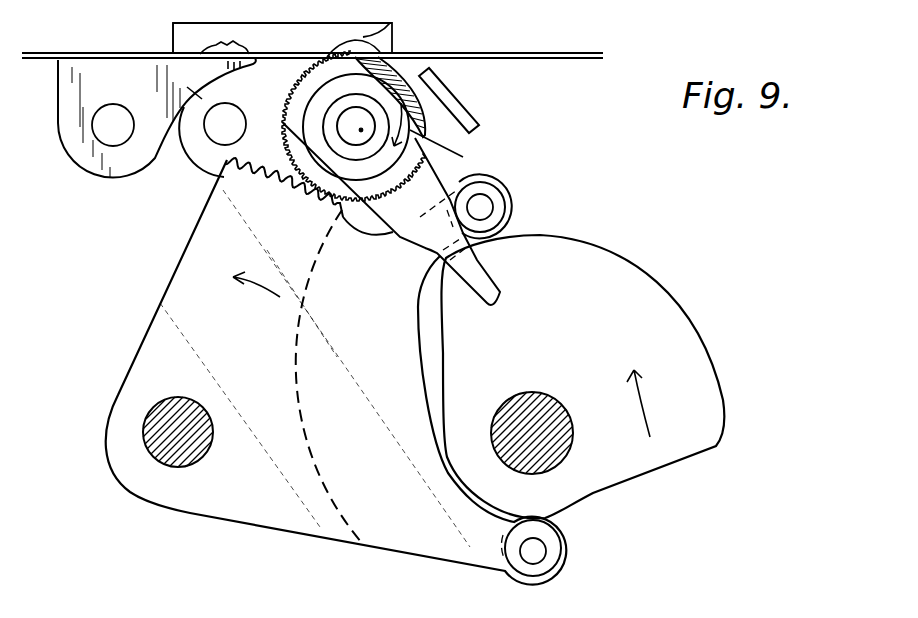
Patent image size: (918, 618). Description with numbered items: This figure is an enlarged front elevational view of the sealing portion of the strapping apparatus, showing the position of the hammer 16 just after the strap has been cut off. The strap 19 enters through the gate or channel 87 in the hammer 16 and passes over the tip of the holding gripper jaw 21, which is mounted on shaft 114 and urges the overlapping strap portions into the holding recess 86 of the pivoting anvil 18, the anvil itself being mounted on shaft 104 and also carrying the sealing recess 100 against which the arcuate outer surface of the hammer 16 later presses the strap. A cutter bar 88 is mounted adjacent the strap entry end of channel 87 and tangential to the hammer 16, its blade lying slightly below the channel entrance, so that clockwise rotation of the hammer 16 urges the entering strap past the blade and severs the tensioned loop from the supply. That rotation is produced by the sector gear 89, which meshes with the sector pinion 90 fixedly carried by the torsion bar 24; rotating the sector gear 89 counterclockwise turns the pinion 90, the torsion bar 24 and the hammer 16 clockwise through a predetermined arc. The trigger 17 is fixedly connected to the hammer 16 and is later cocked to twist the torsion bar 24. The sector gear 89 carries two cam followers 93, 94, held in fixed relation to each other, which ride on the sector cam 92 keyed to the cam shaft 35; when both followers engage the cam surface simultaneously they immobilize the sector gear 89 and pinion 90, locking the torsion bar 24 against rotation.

The pivoting anvil 18 is at (173, 32).
The holding recess 86 is at (230, 47).
The sealing recess 100 is at (392, 23).
The strap 19 is at (490, 50).
The hammer 16 is at (297, 90).
The cutter bar 88 is at (427, 87).
The channel 87 is at (453, 151).
The cam follower 93 is at (500, 183).
The holding gripper jaw 21 is at (201, 142).
The shaft 114 is at (110, 130).
The shaft 104 is at (222, 130).
The torsion bar 24 is at (362, 132).
The sector pinion 90 is at (303, 163).
The sector gear 89 is at (217, 230).
The trigger 17 is at (480, 283).
The sector cam 92 is at (630, 280).
The cam shaft 35 is at (541, 403).
The cam follower 94 is at (563, 553).